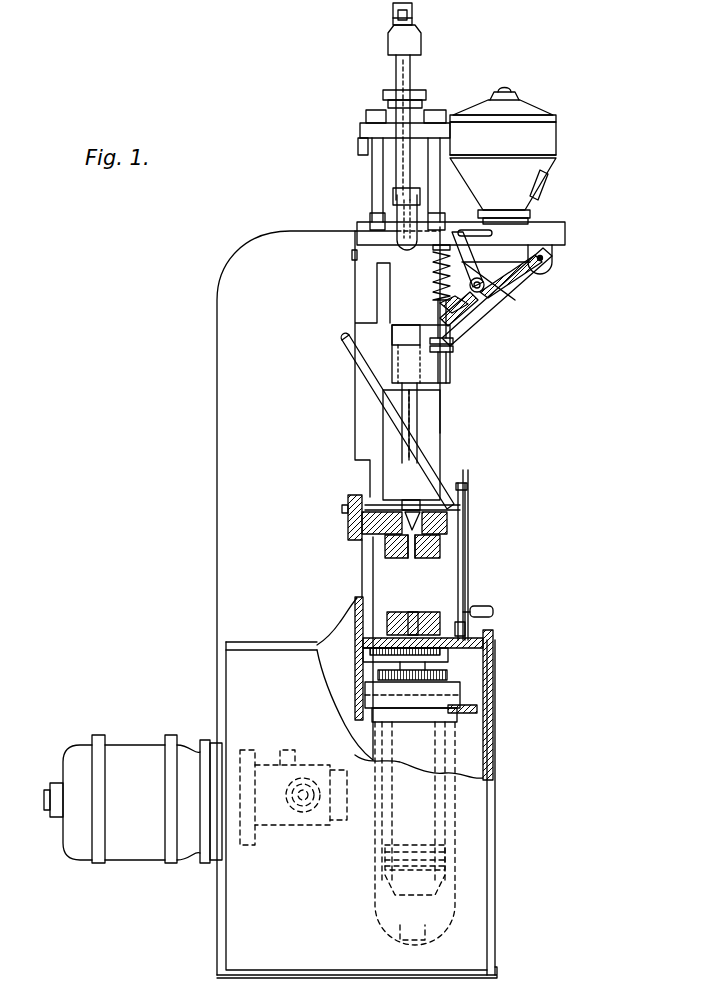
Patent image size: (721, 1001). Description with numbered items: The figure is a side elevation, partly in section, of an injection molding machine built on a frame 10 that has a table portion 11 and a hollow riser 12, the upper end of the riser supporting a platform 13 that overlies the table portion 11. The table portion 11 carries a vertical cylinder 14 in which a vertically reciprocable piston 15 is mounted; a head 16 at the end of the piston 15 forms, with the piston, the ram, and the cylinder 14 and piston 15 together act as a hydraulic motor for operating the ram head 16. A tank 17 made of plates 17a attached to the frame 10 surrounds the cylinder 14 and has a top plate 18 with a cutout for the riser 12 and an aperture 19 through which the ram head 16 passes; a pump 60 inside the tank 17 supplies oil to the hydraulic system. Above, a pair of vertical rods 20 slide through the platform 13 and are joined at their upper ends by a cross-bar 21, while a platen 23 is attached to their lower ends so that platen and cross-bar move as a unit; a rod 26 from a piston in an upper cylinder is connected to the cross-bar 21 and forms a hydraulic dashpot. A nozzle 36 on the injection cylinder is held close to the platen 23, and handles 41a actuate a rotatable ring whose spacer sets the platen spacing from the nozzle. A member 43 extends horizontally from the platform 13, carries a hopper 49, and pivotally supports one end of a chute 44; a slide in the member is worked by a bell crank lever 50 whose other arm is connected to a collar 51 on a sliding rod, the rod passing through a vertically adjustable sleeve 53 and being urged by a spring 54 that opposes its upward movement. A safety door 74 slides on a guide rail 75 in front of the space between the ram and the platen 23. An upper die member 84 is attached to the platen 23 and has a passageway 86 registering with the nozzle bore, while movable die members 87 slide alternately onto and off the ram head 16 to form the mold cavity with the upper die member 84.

The frame 10 is at (320, 660).
The table portion 11 is at (472, 700).
The hollow riser 12 is at (247, 585).
The platform 13 is at (372, 240).
The vertical cylinder 14 is at (372, 713).
The piston 15 is at (385, 872).
The ram head 16 is at (450, 655).
The tank 17 is at (250, 918).
The plates 17a is at (495, 880).
The top plate 18 is at (484, 640).
The aperture 19 is at (440, 626).
The vertical rods 20 is at (412, 106).
The cross-bar 21 is at (422, 46).
The platen 23 is at (448, 523).
The rod 26 is at (414, 76).
The nozzle 36 is at (388, 547).
The handles 41a is at (403, 243).
The member 43 is at (560, 222).
The chute 44 is at (488, 306).
The hopper 49 is at (548, 172).
The bell crank lever 50 is at (500, 290).
The collar 51 is at (455, 318).
The vertically adjustable sleeve 53 is at (453, 341).
The spring 54 is at (443, 308).
The pump 60 is at (292, 822).
The safety door 74 is at (464, 562).
The guide rail 75 is at (466, 492).
The upper die member 84 is at (392, 560).
The passageway 86 is at (426, 560).
The movable die members 87 is at (402, 612).